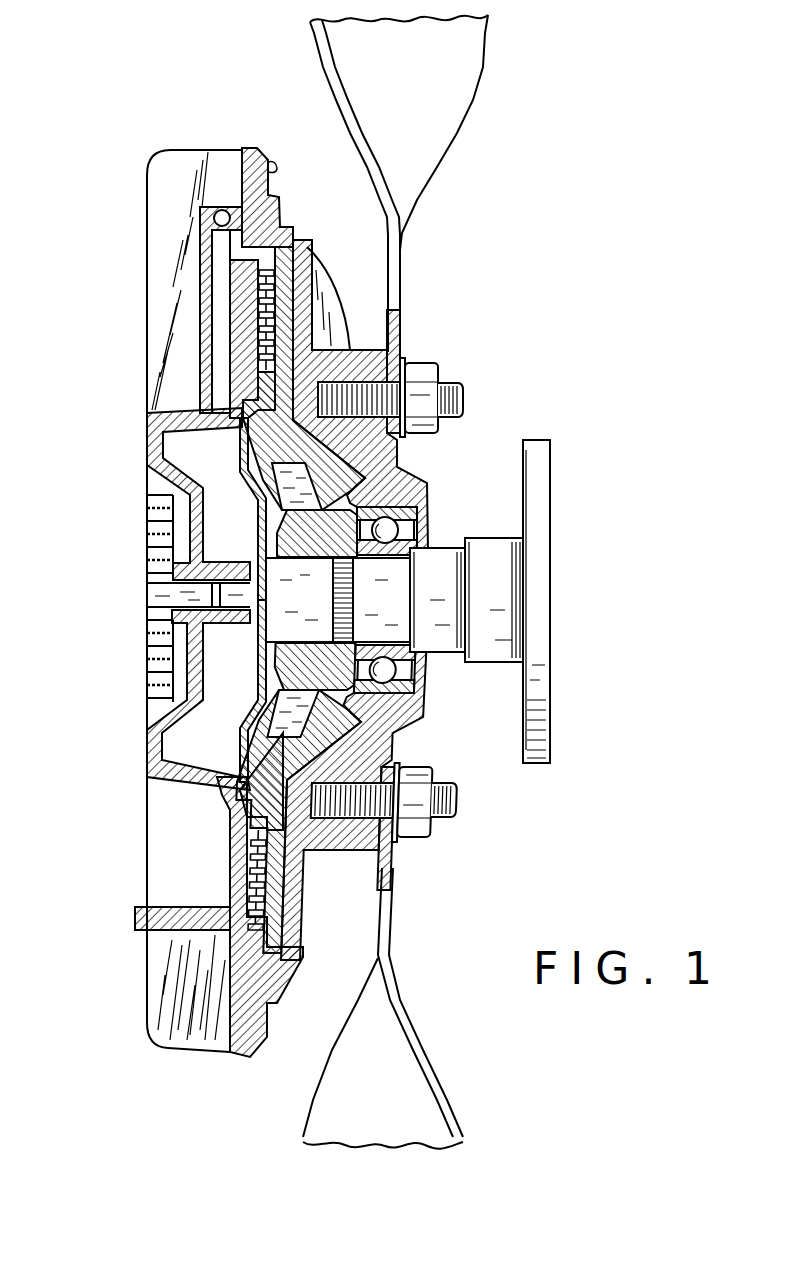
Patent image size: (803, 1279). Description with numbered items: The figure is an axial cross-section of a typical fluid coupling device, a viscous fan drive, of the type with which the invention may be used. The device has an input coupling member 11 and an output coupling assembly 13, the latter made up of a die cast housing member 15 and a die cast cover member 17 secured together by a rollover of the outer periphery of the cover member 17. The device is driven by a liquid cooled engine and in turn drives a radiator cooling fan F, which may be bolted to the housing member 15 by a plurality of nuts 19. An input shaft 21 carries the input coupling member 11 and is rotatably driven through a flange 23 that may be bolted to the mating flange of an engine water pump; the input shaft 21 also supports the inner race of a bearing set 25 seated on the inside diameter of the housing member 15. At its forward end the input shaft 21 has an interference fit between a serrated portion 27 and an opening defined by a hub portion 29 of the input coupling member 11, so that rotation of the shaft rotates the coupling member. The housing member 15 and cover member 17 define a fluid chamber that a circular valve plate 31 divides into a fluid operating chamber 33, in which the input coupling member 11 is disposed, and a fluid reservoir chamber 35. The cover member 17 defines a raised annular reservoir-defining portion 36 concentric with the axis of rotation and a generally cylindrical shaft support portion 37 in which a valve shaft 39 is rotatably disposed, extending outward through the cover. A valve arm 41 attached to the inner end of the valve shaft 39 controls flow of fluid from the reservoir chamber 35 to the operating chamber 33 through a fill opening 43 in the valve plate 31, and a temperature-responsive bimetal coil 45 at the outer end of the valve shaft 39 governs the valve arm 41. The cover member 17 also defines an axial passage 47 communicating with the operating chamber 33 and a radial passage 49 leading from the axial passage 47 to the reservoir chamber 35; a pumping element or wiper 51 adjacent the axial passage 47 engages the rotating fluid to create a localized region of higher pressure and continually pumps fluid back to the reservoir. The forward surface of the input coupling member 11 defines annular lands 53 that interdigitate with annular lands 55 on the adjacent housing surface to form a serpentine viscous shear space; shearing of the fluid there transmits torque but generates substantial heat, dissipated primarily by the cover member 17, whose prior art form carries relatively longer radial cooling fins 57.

The input coupling member 11 is at (327, 723).
The output coupling assembly 13 is at (343, 262).
The housing member 15 is at (378, 350).
The cover member 17 is at (130, 352).
The nuts 19 is at (425, 375).
The input shaft 21 is at (440, 562).
The flange 23 is at (540, 635).
The bearing set 25 is at (405, 672).
The serrated portion 27 is at (345, 618).
The hub portion 29 is at (340, 532).
The valve plate 31 is at (262, 525).
The fluid operating chamber 33 is at (318, 462).
The fluid reservoir chamber 35 is at (198, 700).
The reservoir-defining portion 36 is at (147, 760).
The shaft support portion 37 is at (228, 630).
The valve shaft 39 is at (147, 598).
The valve arm 41 is at (232, 473).
The fill opening 43 is at (252, 437).
The bimetal coil 45 is at (150, 555).
The axial passage 47 is at (247, 258).
The radial passage 49 is at (218, 347).
The pumping element 51 is at (283, 233).
The annular lands 53 is at (245, 857).
The annular lands 55 is at (245, 888).
The radial cooling fins 57 is at (147, 212).
The radiator cooling fan F is at (470, 80).